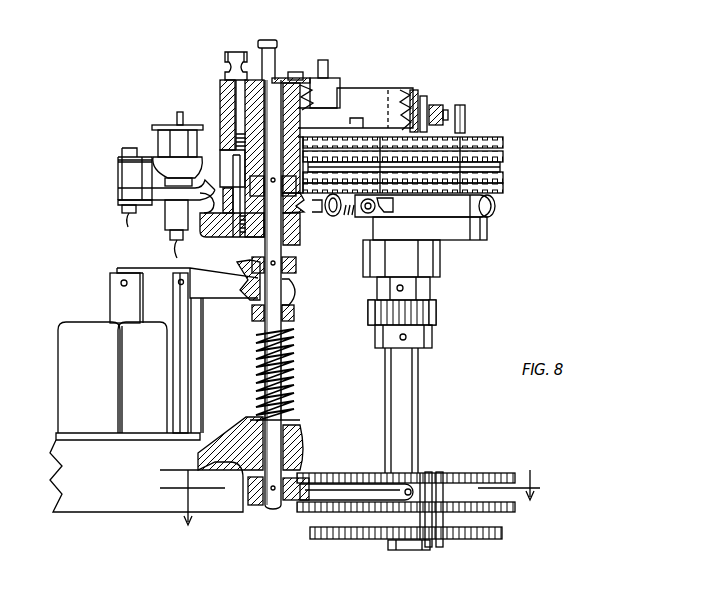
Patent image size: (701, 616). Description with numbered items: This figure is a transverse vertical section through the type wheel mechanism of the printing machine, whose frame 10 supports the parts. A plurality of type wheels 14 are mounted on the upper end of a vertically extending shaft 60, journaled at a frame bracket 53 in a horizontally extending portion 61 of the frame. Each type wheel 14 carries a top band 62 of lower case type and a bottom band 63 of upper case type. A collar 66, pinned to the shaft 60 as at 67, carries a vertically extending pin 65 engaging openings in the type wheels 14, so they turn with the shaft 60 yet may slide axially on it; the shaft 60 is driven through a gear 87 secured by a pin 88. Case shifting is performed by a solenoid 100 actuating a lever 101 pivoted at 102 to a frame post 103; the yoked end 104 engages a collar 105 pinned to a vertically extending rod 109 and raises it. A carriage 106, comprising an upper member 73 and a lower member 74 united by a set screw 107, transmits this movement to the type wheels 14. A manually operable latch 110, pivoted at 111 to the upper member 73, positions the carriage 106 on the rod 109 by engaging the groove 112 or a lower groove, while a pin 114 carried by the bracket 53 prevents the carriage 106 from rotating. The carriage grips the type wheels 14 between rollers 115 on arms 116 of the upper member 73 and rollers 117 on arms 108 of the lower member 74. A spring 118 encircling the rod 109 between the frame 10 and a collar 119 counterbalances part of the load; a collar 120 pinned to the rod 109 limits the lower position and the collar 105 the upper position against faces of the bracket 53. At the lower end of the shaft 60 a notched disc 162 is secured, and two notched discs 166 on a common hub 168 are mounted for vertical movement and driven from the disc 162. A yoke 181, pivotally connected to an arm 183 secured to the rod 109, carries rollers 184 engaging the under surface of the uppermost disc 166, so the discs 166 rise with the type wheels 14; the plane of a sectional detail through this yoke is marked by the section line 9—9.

The frame 10 is at (176, 464).
The type wheels 14 is at (505, 146).
The frame bracket 53 is at (442, 262).
The vertically extending shaft 60 is at (414, 98).
The horizontally extending portion 61 is at (492, 232).
The top band of type 62 is at (504, 139).
The bottom band of type 63 is at (505, 155).
The pin or rod 65 is at (466, 110).
The collar 66 is at (384, 214).
The pin 67 is at (364, 213).
The upper carriage member 73 is at (223, 92).
The lower carriage member 74 is at (240, 166).
The gear 87 is at (437, 313).
The pin 88 is at (434, 337).
The solenoid 100 is at (68, 330).
The lever 101 is at (122, 268).
The pivot 102 is at (178, 286).
The frame bracket or post 103 is at (183, 353).
The yoked end 104 is at (294, 292).
The collar 105 is at (308, 257).
The carriage 106 is at (348, 92).
The set screw 107 is at (226, 58).
The arms 108 is at (500, 206).
The rod 109 is at (291, 351).
The latch 110 is at (333, 80).
The pivot 111 is at (279, 54).
The groove 112 is at (280, 46).
The pin 114 is at (238, 181).
The rollers 115 is at (427, 102).
The arms 116 is at (446, 112).
The rollers 117 is at (492, 214).
The spring 118 is at (288, 373).
The collar 119 is at (300, 68).
The collar 120 is at (246, 240).
The disc 162 is at (328, 540).
The discs 166 is at (488, 477).
The hub 168 is at (433, 474).
The yoke 181 is at (330, 500).
The arm 183 is at (252, 506).
The rollers 184 is at (428, 550).
The section line 9 is at (350, 513).